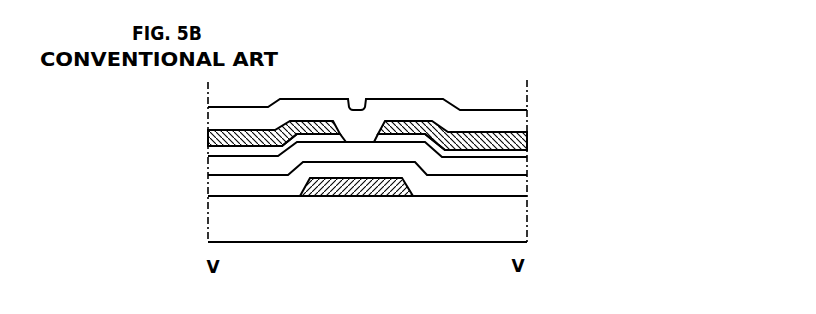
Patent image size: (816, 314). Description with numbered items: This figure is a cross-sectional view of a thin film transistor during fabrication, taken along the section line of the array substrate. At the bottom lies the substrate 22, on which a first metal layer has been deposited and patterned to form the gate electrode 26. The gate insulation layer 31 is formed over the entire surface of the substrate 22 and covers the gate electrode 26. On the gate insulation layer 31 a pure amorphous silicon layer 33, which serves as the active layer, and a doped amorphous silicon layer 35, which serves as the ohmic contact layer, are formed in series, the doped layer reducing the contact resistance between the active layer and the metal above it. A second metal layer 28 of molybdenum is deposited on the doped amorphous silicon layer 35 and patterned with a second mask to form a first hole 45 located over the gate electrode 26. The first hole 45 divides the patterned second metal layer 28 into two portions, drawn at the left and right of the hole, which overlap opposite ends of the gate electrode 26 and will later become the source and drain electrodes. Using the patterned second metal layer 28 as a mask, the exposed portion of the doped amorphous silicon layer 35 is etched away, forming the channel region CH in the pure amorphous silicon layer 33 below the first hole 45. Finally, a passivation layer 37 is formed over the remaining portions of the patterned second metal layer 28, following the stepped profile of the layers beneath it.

The substrate 22 is at (354, 232).
The gate electrode 26 is at (322, 197).
The gate insulation layer 31 is at (523, 190).
The pure amorphous silicon layer 33 is at (523, 166).
The second metal layer 28 is at (315, 121).
The doped amorphous silicon layer 35 is at (208, 148).
The passivation layer 37 is at (433, 99).
The first hole 45 is at (372, 124).
The channel region CH is at (347, 138).